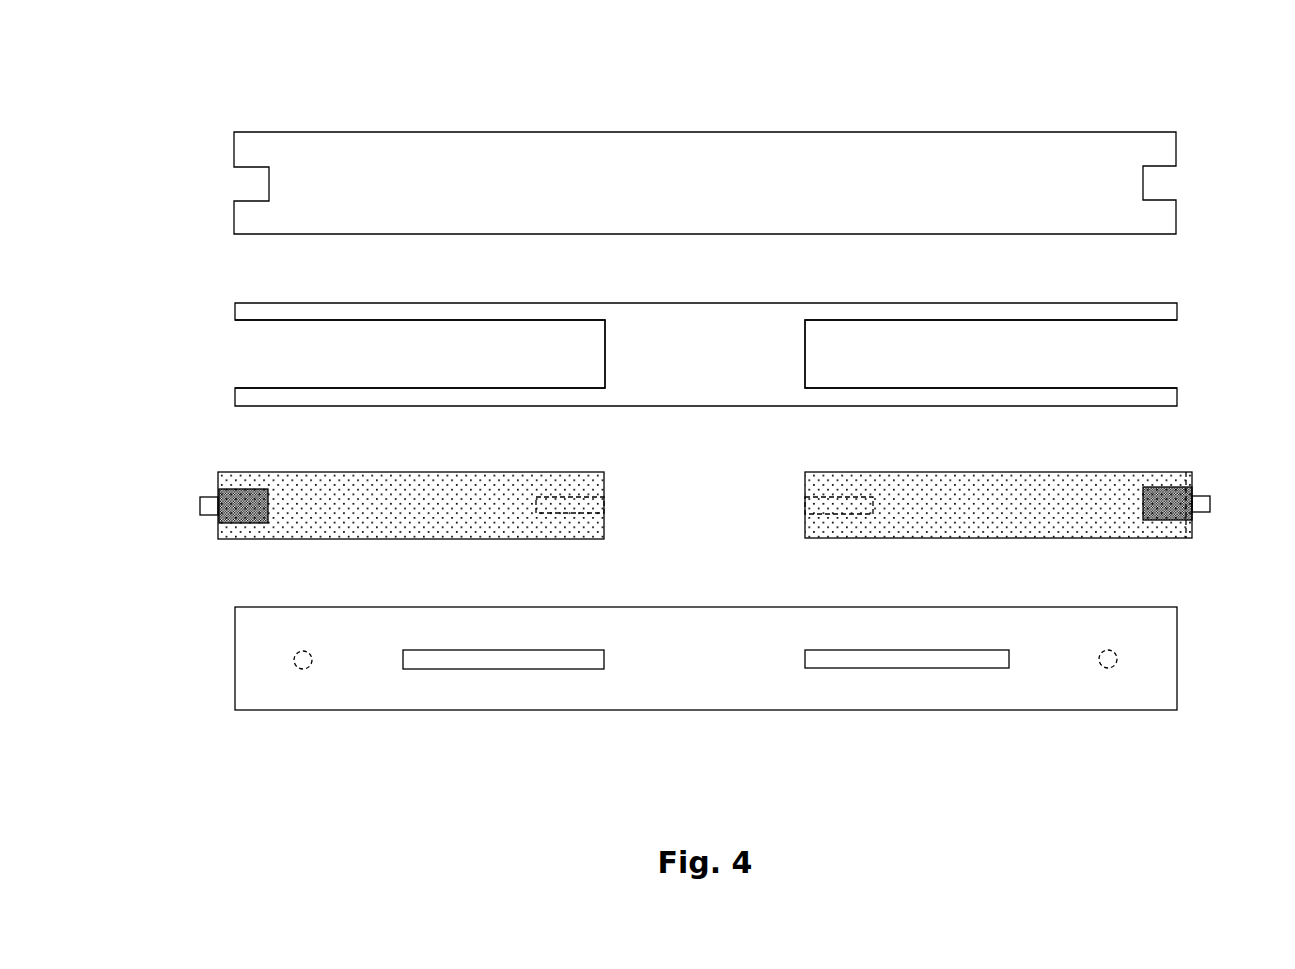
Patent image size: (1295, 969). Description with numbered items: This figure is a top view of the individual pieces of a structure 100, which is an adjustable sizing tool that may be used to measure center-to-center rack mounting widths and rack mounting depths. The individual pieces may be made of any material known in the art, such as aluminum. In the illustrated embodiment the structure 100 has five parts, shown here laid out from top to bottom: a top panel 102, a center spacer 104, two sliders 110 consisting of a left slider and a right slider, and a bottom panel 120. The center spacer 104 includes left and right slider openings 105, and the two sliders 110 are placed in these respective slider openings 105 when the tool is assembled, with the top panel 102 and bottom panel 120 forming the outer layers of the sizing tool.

The structure 100 is at (232, 62).
The top panel 102 is at (687, 192).
The center spacer 104 is at (687, 362).
The slider openings 105 is at (235, 352).
The sliders 110 is at (219, 456).
The bottom panel 120 is at (687, 669).